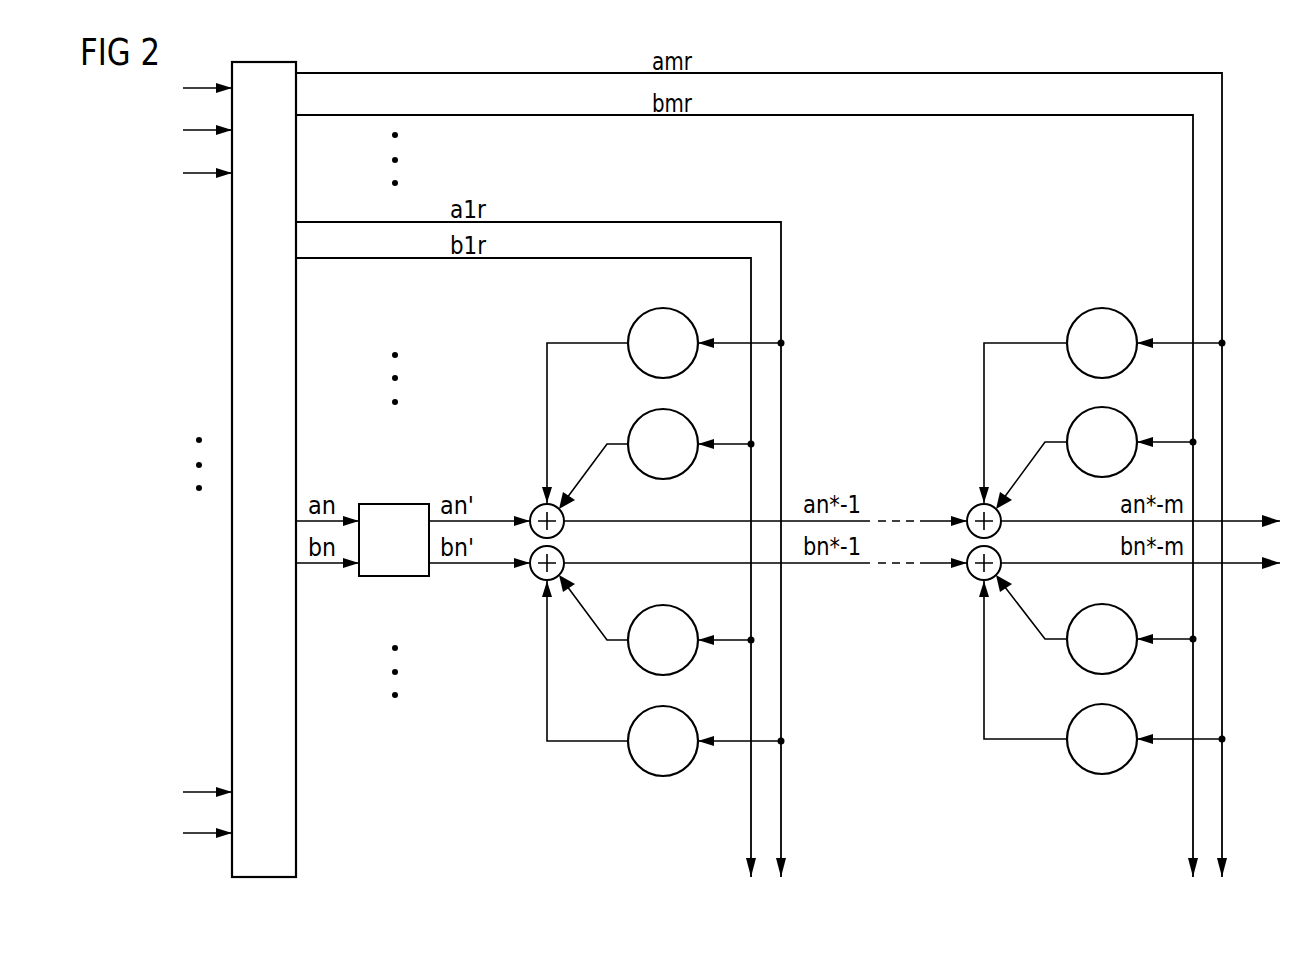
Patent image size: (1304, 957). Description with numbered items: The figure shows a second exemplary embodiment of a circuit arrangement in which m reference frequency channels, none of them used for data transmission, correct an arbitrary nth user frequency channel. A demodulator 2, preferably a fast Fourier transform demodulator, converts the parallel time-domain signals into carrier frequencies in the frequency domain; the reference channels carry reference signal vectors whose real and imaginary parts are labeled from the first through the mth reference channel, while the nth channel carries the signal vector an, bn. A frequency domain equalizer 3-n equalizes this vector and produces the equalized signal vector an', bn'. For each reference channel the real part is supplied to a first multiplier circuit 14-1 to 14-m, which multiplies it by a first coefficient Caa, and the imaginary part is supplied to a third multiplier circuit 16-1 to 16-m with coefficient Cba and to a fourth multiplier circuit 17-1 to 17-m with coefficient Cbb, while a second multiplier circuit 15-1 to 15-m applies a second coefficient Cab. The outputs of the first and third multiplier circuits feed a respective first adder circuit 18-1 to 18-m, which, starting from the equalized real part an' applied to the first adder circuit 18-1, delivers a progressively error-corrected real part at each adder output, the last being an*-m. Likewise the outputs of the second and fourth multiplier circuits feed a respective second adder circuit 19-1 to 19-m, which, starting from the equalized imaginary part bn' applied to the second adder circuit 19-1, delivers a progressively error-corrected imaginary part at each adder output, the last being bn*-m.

The demodulator 2 is at (296, 347).
The frequency domain equalizer 3-n is at (380, 577).
The first multiplier circuit 14-1 is at (639, 318).
The third multiplier circuit 16-1 is at (642, 419).
The fourth multiplier circuit 17-1 is at (640, 612).
The second multiplier circuit 15-1 is at (639, 713).
The first adder circuit 18-1 is at (537, 505).
The second adder circuit 19-1 is at (537, 581).
The first multiplier circuit 14-m is at (1101, 307).
The third multiplier circuit 16-m is at (1073, 413).
The fourth multiplier circuit 17-m is at (1073, 668).
The second multiplier circuit 15-m is at (1104, 774).
The first adder circuit 18-m is at (973, 504).
The second adder circuit 19-m is at (973, 581).